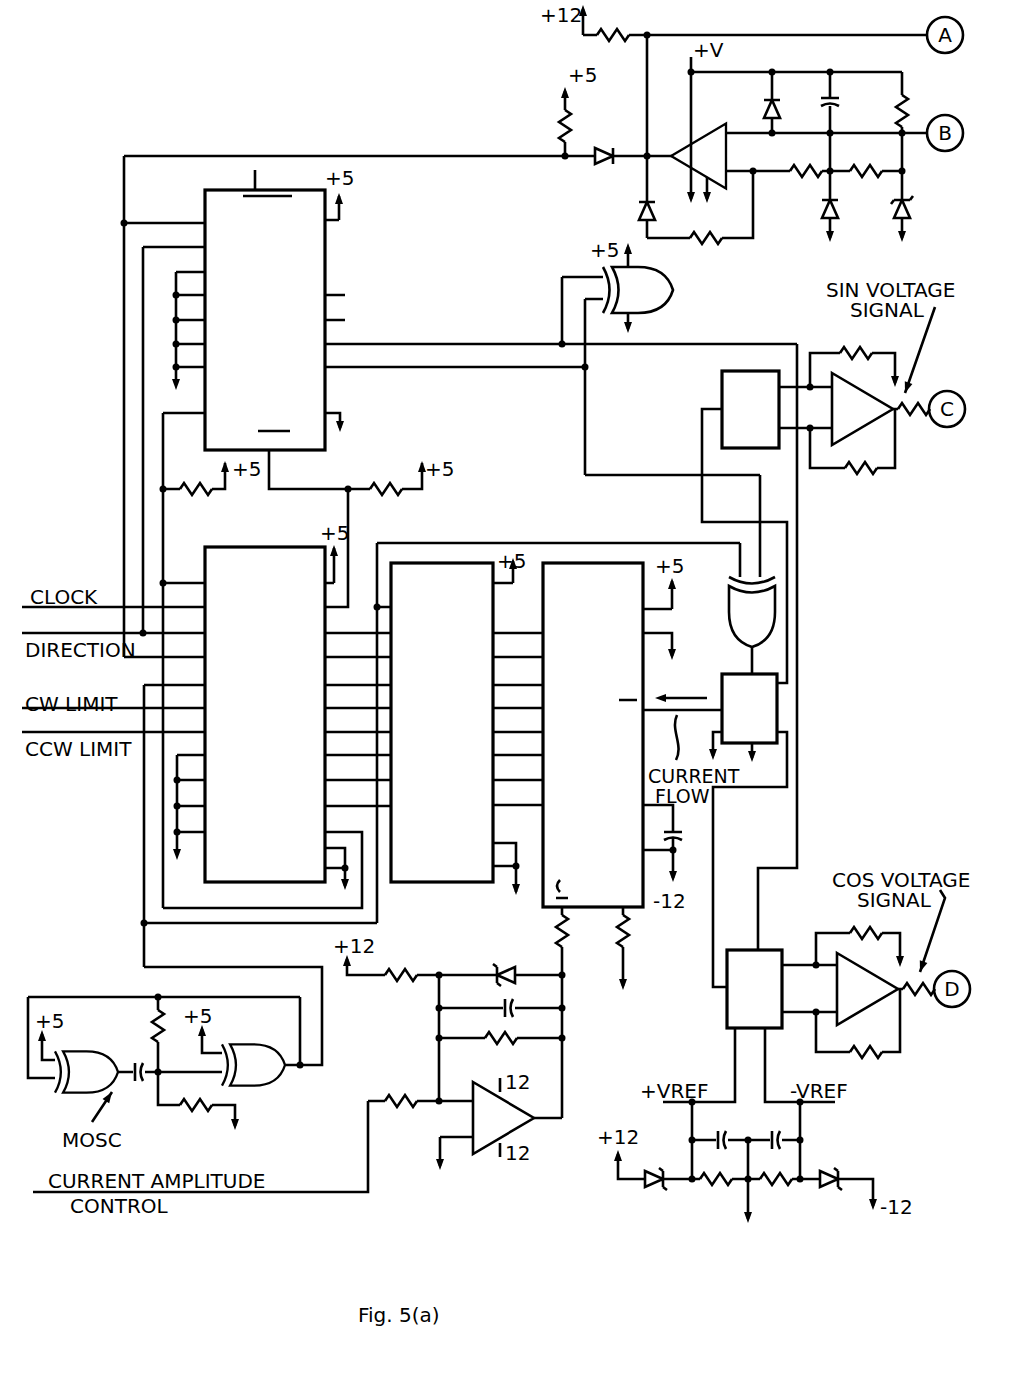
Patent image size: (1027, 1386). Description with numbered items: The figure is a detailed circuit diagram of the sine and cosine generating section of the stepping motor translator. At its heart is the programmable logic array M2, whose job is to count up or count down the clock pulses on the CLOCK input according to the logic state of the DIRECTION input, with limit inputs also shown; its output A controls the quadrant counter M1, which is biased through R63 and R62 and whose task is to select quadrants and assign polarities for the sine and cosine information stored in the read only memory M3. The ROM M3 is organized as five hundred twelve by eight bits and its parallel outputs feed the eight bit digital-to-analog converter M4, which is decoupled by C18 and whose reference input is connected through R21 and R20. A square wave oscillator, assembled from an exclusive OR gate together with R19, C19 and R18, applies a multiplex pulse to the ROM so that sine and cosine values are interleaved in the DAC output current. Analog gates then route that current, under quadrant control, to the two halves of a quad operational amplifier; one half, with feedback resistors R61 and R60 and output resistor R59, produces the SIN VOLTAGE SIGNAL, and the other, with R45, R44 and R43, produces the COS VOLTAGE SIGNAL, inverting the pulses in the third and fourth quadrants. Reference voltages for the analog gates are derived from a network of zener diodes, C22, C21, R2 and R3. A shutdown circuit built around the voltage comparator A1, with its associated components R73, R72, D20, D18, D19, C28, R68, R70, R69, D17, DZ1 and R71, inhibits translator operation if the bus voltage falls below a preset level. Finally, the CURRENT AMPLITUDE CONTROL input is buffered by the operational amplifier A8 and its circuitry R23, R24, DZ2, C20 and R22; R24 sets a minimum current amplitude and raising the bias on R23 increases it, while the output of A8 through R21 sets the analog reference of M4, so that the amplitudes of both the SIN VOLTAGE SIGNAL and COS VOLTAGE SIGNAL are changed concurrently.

The resistor R73 is at (617, 47).
The resistor R72 is at (586, 126).
The diode D20 is at (608, 168).
The diode D18 is at (629, 214).
The diode D19 is at (754, 106).
The capacitor C28 is at (850, 106).
The resistor R68 is at (923, 110).
The resistor R70 is at (807, 161).
The resistor R69 is at (869, 161).
The diode D17 is at (851, 211).
The zener diode DZ1 is at (922, 209).
The resistor R71 is at (709, 249).
The voltage comparator A1 is at (700, 154).
The operational amplifier A8 is at (503, 1118).
The resistor R61 is at (852, 343).
The resistor R60 is at (859, 478).
The resistor R59 is at (915, 430).
The resistor R45 is at (866, 923).
The resistor R44 is at (870, 1042).
The resistor R43 is at (919, 1011).
The capacitor C18 is at (691, 847).
The resistor R21 is at (583, 931).
The resistor R20 is at (644, 931).
The capacitor C22 is at (719, 1130).
The capacitor C21 is at (777, 1130).
The resistor R2 is at (716, 1191).
The resistor R3 is at (776, 1191).
The zener diode DZ2 is at (508, 965).
The capacitor C20 is at (531, 1001).
The resistor R22 is at (506, 1050).
The resistor R24 is at (399, 988).
The resistor R23 is at (404, 1113).
The resistor R19 is at (139, 1026).
The resistor R18 is at (194, 1117).
The capacitor C19 is at (134, 1085).
The resistor R63 is at (199, 501).
The resistor R62 is at (387, 501).
The quadrant counter M1 is at (265, 321).
The programmable logic array M2 is at (265, 714).
The read only memory M3 is at (442, 722).
The digital-to-analog converter M4 is at (593, 736).